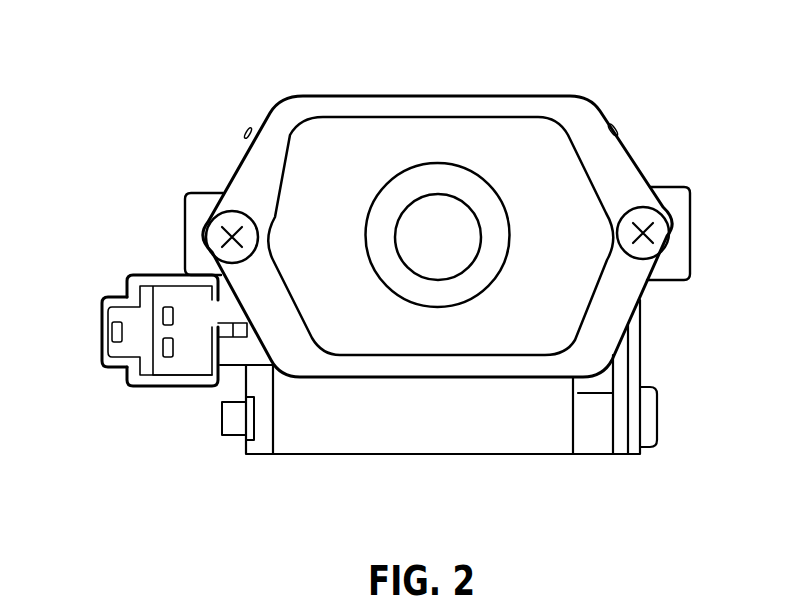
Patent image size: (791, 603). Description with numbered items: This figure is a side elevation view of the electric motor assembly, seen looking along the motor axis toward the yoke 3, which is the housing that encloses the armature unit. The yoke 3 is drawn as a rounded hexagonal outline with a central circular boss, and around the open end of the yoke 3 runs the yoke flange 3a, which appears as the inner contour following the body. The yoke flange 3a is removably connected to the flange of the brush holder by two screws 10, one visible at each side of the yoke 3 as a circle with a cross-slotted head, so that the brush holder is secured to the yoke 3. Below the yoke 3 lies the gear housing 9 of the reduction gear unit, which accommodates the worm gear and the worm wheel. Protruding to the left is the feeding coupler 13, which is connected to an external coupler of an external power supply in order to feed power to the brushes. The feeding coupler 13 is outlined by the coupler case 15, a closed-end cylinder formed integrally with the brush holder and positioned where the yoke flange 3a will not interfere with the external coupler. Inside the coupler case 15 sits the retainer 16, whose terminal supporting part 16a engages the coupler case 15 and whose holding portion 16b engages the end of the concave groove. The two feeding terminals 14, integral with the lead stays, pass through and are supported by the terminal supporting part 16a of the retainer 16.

The yoke 3 is at (534, 87).
The yoke flange 3a is at (300, 113).
The gear housing 9 is at (428, 444).
The screws 10 is at (232, 215).
The feeding coupler 13 is at (112, 277).
The feeding terminals 14 is at (163, 346).
The coupler case 15 is at (109, 369).
The retainer 16 is at (197, 380).
The terminal supporting part 16a is at (180, 372).
The holding portion 16b is at (225, 365).